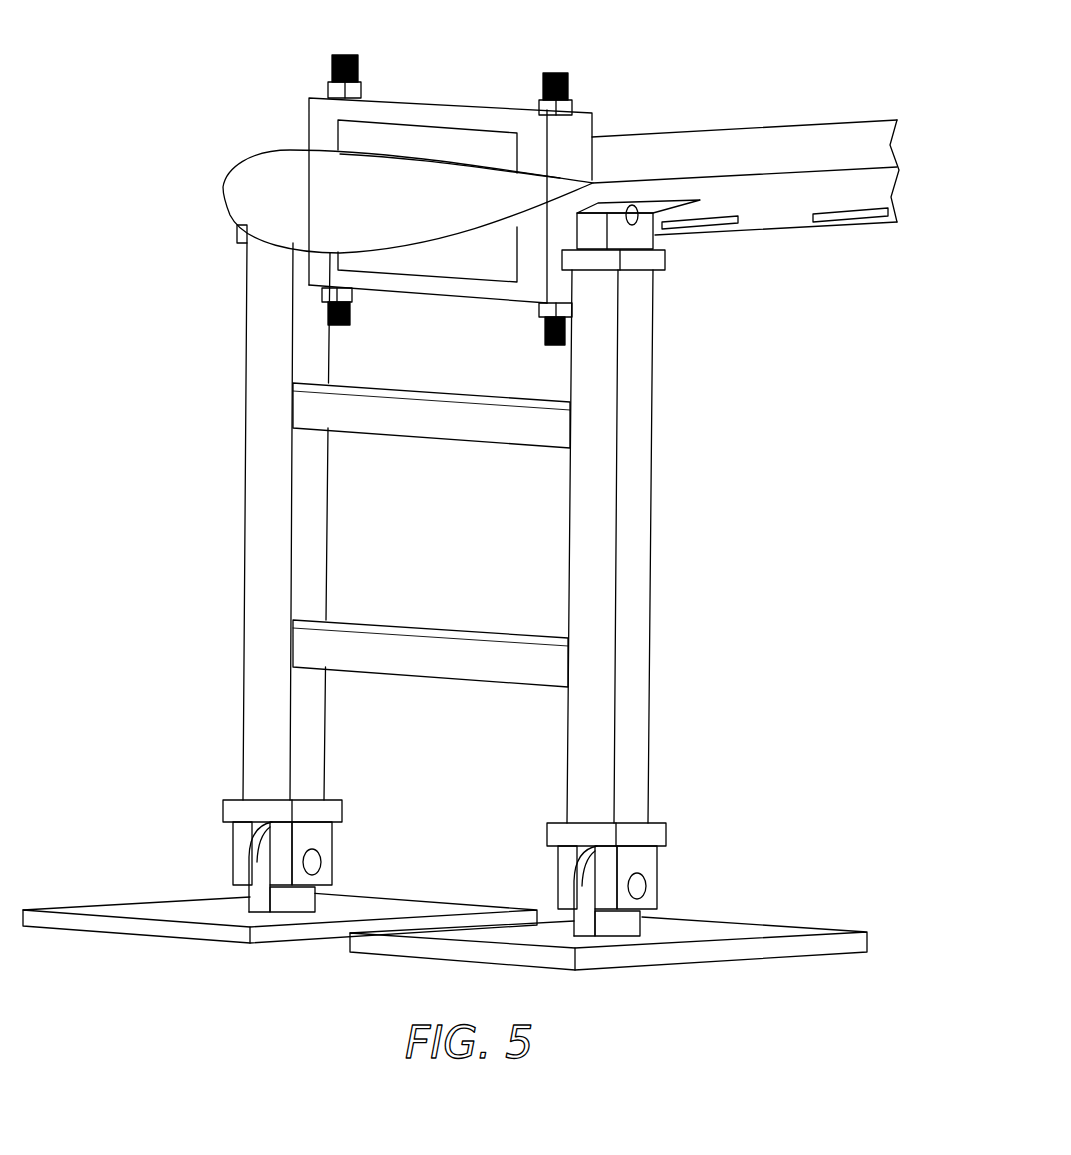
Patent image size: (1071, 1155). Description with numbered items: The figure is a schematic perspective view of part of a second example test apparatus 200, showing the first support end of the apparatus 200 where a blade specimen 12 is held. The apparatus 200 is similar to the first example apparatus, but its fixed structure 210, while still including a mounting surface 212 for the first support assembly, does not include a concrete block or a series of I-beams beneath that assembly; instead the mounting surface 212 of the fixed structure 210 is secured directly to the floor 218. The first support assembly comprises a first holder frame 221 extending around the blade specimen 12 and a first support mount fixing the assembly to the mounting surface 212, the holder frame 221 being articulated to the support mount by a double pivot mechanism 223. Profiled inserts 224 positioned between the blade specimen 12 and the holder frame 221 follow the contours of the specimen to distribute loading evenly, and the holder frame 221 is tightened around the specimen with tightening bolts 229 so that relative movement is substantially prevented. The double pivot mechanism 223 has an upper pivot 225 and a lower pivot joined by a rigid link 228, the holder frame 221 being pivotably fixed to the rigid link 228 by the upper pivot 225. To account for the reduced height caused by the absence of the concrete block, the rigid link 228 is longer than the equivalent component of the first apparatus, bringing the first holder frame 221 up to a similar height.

The second example apparatus 200 is at (236, 72).
The airfoil 12 is at (230, 185).
The first holder frame 221 is at (483, 118).
The clamping pad 224 is at (403, 137).
The clamp bolt 229 is at (572, 102).
The mounting block 225 is at (643, 233).
The support column 223 is at (652, 450).
The rigid link 228 is at (637, 540).
The floor 218 is at (100, 955).
The mounting surface 212 is at (758, 932).
The fixed structure 210 is at (677, 942).